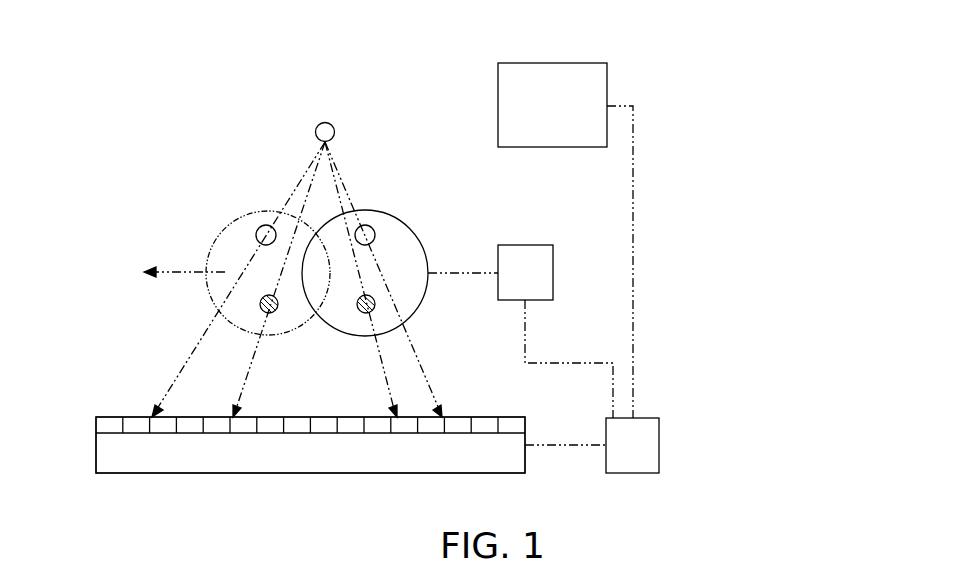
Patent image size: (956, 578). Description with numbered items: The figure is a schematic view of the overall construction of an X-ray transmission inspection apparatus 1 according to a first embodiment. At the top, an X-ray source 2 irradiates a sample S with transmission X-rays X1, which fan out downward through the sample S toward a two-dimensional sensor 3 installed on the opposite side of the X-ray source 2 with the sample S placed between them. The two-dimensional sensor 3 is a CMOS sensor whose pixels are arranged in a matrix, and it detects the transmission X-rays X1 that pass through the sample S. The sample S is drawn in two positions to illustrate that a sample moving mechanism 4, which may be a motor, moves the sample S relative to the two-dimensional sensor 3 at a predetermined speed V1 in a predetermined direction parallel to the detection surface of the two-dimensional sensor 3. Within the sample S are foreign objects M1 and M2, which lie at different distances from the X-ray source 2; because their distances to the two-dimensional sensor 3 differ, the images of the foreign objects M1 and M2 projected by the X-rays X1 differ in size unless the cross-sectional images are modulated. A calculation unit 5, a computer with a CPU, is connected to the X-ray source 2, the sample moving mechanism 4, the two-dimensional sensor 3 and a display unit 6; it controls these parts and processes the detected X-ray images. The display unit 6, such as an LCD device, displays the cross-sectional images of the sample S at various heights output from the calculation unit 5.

The X-ray transmission inspection apparatus 1 is at (170, 150).
The X-ray source 2 is at (333, 125).
The two-dimensional sensor 3 is at (96, 447).
The sample moving mechanism 4 is at (553, 265).
The calculation unit 5 is at (647, 418).
The display unit 6 is at (585, 63).
The sample S is at (215, 236).
The foreign object M1 is at (263, 227).
The foreign object M2 is at (260, 304).
The predetermined speed V1 is at (169, 273).
The transmission X-rays X1 is at (176, 377).